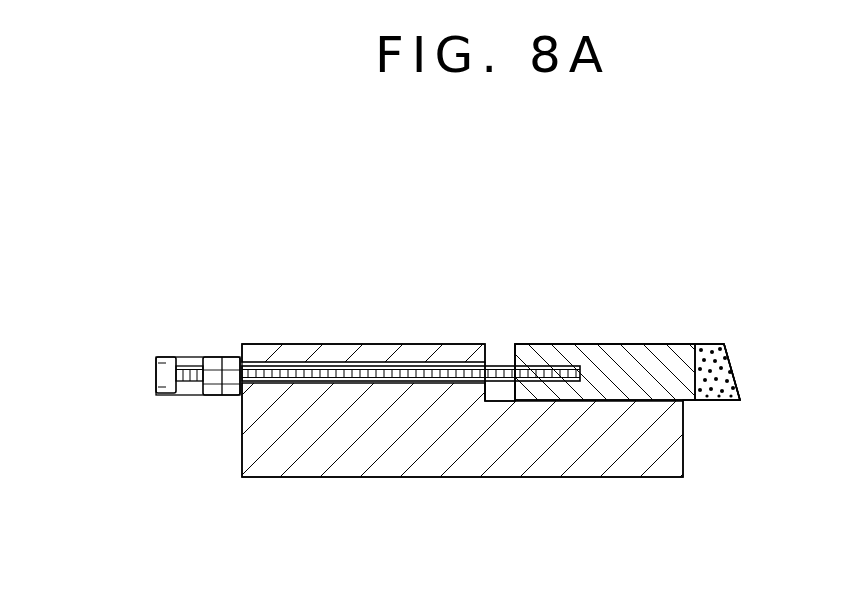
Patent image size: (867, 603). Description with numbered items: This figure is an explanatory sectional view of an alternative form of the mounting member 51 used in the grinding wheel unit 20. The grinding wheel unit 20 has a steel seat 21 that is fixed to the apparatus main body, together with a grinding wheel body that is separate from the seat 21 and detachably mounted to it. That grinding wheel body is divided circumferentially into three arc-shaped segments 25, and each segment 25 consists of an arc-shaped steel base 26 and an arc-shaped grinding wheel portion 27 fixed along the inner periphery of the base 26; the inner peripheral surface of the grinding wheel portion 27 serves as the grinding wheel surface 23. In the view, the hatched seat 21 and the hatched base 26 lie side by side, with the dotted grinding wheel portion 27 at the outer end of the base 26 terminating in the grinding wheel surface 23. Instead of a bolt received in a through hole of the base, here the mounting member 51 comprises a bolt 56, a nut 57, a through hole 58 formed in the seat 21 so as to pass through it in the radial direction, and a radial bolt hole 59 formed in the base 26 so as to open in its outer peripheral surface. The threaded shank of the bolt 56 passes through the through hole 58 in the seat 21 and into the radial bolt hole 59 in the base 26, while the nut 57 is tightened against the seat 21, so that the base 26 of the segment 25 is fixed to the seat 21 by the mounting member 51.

The grinding wheel unit 20 is at (766, 310).
The seat 21 is at (362, 343).
The grinding wheel surface 23 is at (740, 370).
The segment 25 is at (747, 248).
The base 26 is at (633, 343).
The grinding wheel portion 27 is at (718, 343).
The mounting member 51 is at (152, 400).
The bolt 56 is at (185, 358).
The nut 57 is at (238, 357).
The through hole 58 is at (388, 381).
The radial bolt hole 59 is at (553, 380).